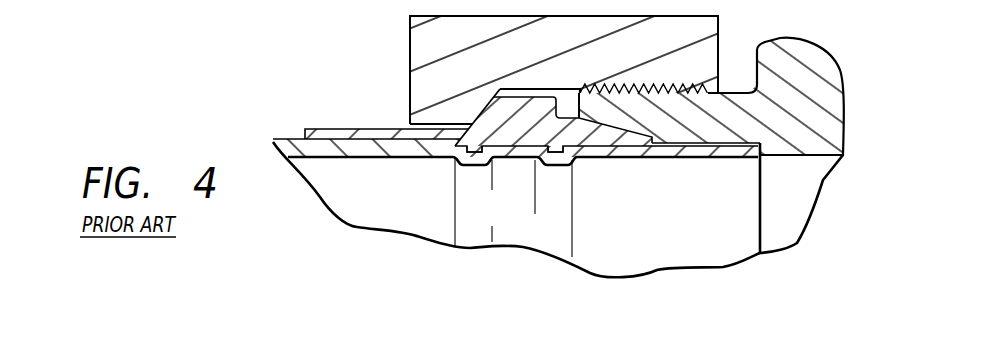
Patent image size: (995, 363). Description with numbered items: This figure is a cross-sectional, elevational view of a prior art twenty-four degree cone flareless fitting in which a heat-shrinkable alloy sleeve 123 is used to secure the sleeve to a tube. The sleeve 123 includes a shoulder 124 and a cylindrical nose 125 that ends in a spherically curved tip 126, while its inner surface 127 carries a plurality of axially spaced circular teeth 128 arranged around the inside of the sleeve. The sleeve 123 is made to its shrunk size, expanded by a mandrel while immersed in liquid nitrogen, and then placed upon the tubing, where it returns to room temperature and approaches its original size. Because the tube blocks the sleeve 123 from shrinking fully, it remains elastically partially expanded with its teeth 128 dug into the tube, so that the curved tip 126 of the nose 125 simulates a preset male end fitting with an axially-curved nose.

The sleeve 123 is at (388, 128).
The shoulder 124 is at (516, 147).
The cylindrical nose 125 is at (611, 137).
The spherically curved tip 126 is at (637, 135).
The inner surface 127 is at (353, 148).
The circular teeth 128 is at (473, 158).